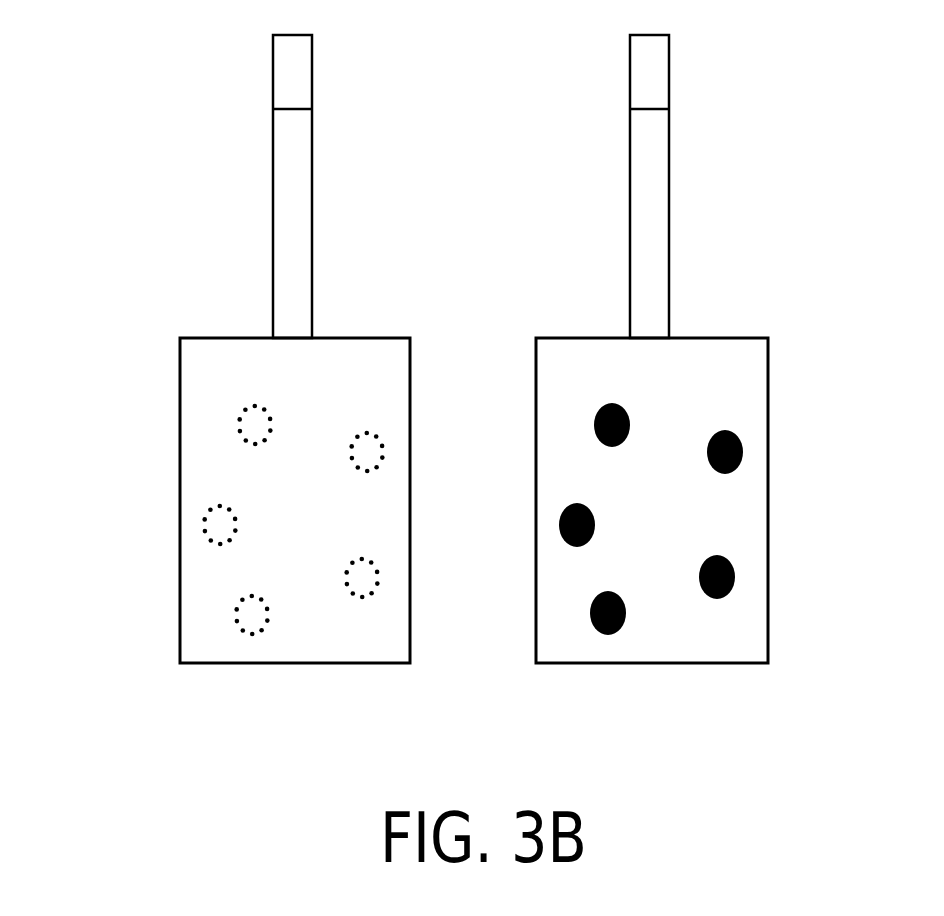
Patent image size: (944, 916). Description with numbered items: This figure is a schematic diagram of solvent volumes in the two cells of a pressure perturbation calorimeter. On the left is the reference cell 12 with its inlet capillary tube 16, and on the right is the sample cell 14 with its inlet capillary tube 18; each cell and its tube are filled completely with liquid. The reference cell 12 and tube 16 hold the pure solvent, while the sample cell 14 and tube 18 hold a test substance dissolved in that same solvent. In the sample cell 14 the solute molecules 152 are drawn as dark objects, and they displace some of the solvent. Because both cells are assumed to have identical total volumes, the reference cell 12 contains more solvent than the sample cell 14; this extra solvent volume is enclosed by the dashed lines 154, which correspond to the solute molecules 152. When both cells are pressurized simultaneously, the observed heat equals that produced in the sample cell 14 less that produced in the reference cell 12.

The reference cell 12 is at (122, 515).
The sample cell 14 is at (828, 513).
The inlet capillary tube 16 is at (273, 70).
The inlet capillary tube 18 is at (669, 70).
The solute molecules 152 is at (725, 430).
The dashed lines 154 is at (372, 430).